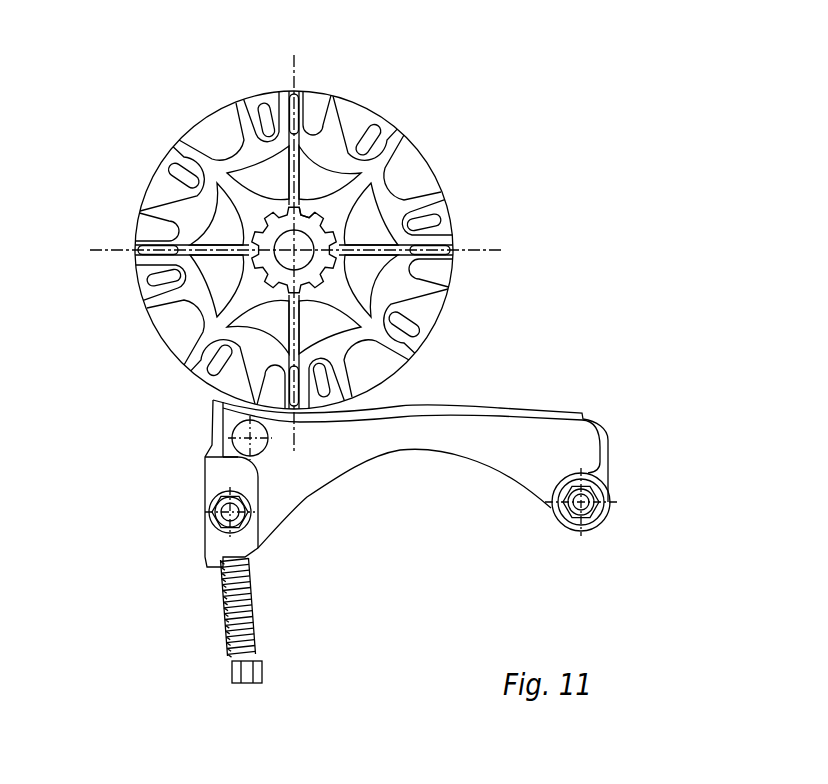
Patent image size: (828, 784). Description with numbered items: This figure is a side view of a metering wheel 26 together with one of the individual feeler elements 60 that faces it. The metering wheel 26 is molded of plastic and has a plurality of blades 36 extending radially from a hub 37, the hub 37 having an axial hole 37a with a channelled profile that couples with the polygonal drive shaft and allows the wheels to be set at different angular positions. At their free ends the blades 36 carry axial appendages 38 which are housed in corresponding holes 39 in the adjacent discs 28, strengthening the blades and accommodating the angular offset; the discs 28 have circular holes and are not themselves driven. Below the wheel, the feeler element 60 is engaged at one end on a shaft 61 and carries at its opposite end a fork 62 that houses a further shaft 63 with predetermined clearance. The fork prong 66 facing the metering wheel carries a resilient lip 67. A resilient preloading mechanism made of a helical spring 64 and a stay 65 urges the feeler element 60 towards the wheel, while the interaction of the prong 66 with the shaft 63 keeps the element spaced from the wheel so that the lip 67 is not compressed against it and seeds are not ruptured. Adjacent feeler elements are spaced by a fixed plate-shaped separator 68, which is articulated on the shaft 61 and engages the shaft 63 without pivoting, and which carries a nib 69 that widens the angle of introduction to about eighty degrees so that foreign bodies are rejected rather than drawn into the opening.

The metering wheel 26 is at (395, 278).
The disc 28 is at (423, 152).
The blade 36 is at (248, 135).
The hub 37 is at (256, 254).
The axial hole 37a is at (315, 221).
The axial appendage 38 is at (187, 146).
The hole 39 is at (376, 122).
The feeler element 60 is at (427, 452).
The shaft 61 is at (606, 505).
The fork 62 is at (259, 480).
The shaft 63 is at (204, 527).
The helical spring 64 is at (227, 612).
The stay 65 is at (252, 630).
The fork prong 66 is at (212, 424).
The resilient lip 67 is at (213, 402).
The separator 68 is at (218, 465).
The nib 69 is at (388, 399).